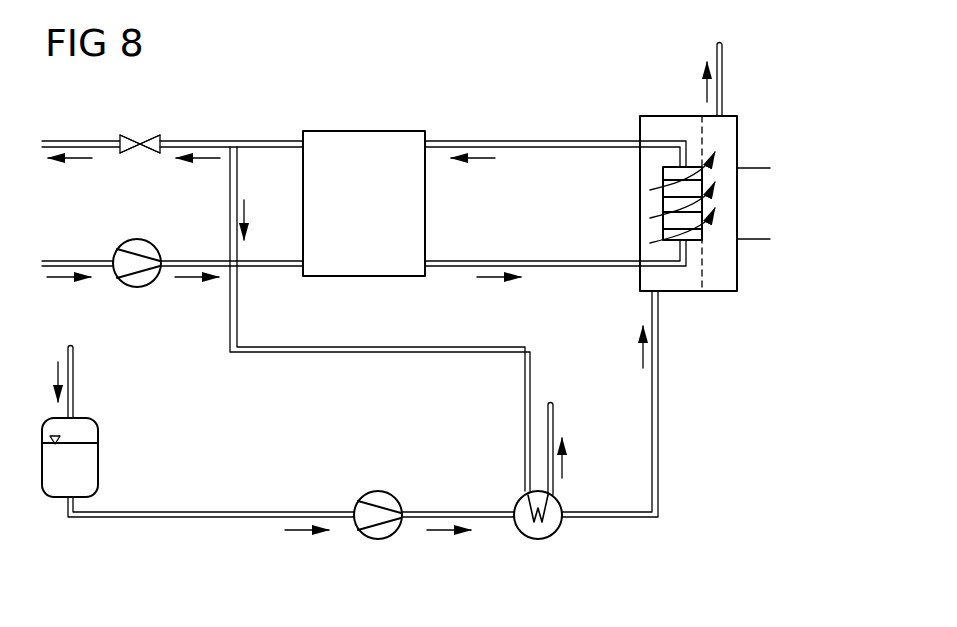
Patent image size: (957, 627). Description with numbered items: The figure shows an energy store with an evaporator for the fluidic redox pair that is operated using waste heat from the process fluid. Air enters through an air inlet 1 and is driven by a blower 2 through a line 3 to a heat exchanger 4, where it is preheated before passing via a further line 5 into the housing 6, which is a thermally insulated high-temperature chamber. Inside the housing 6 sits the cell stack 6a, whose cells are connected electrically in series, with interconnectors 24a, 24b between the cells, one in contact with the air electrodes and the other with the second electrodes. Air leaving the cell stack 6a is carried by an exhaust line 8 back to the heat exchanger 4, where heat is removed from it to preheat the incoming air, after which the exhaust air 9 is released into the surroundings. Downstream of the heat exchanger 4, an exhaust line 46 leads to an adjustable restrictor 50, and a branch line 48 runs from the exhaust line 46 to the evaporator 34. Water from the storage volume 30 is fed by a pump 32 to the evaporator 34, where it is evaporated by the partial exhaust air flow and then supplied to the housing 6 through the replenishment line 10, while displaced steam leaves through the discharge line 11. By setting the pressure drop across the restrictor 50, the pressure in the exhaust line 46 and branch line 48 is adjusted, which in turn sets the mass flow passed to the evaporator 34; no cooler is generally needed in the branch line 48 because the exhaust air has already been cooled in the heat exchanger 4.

The air inlet 1 is at (68, 260).
The blower 2 is at (138, 240).
The line 3 is at (196, 260).
The heat exchanger 4 is at (362, 131).
The further line 5 is at (480, 261).
The housing 6 is at (660, 116).
The cell stack 6a is at (654, 201).
The exhaust line 8 is at (474, 141).
The exhaust air 9 is at (70, 140).
The replenishment line 10 is at (660, 345).
The discharge line 11 is at (722, 81).
The interconnector 24a is at (759, 168).
The interconnector 24b is at (759, 240).
The storage volume 30 is at (98, 460).
The pump 32 is at (377, 540).
The evaporator 34 is at (536, 540).
The exhaust line 46 is at (273, 141).
The branch line 48 is at (345, 352).
The restrictor 50 is at (150, 138).